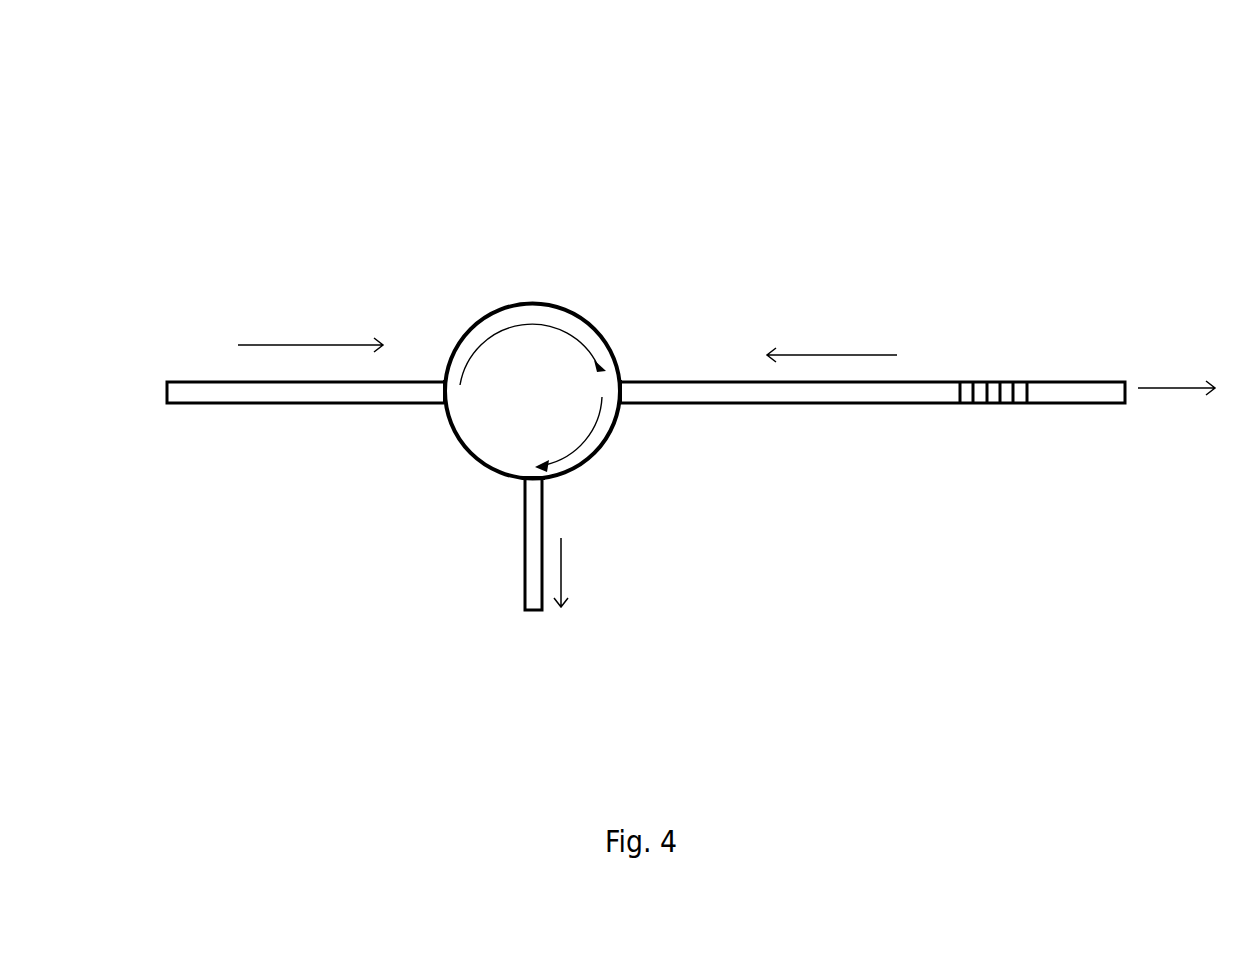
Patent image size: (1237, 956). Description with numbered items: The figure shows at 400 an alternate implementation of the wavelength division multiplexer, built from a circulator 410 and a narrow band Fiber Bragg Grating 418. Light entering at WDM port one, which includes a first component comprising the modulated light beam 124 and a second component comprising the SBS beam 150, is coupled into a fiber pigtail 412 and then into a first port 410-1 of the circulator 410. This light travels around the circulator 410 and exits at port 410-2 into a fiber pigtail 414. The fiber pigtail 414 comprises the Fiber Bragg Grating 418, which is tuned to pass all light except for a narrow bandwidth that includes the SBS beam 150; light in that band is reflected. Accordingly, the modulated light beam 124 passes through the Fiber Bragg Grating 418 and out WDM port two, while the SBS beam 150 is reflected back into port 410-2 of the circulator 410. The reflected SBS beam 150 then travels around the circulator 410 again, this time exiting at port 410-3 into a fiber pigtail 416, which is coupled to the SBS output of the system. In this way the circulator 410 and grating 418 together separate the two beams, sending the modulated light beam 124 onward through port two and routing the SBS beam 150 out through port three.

The alternate implementation of the WDM 400 is at (522, 104).
The circulator 410 is at (593, 325).
The first port of circulator 410-1 is at (440, 387).
The port 410-2 of circulator 410-2 is at (623, 387).
The port 410-3 of circulator 410-3 is at (527, 485).
The fiber pigtail 412 is at (302, 405).
The fiber pigtail 414 is at (707, 403).
The fiber pigtail 416 is at (542, 512).
The Fiber Bragg Grating 418 is at (1000, 380).
The modulated light beam 124 is at (692, 343).
The SBS beam 150 is at (526, 448).